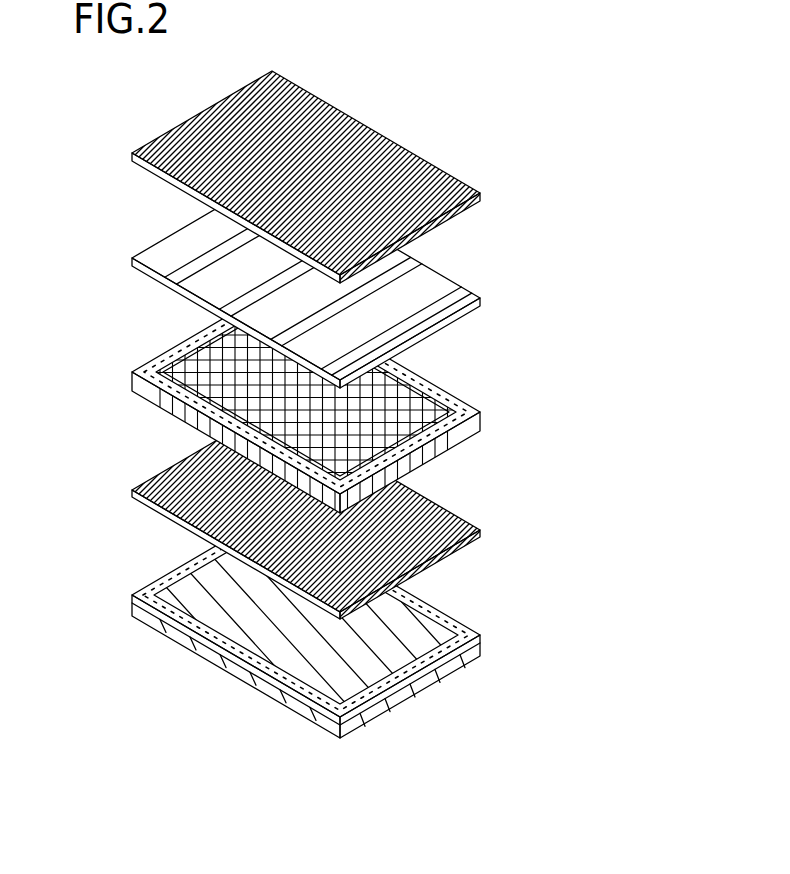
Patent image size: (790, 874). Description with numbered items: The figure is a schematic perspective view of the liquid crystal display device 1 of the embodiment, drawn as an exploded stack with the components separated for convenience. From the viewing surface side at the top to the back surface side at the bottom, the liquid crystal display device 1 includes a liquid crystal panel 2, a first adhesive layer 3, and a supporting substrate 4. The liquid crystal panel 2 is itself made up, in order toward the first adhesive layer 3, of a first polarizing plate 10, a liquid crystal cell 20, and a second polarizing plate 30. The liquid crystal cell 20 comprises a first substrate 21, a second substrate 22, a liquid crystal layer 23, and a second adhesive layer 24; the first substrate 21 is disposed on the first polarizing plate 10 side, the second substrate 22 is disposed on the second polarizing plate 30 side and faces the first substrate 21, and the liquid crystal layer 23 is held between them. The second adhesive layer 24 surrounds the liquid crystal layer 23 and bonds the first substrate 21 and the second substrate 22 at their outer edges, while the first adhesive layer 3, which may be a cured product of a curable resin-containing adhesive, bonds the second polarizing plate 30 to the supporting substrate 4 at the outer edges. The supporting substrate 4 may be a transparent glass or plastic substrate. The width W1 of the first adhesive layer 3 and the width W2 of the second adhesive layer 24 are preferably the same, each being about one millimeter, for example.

The liquid crystal display device 1 is at (507, 117).
The liquid crystal panel 2 is at (637, 144).
The first adhesive layer 3 is at (457, 620).
The supporting substrate 4 is at (480, 652).
The first polarizing plate 10 is at (427, 175).
The liquid crystal cell 20 is at (577, 268).
The first substrate 21 is at (427, 298).
The second substrate 22 is at (480, 428).
The liquid crystal layer 23 is at (437, 361).
The second adhesive layer 24 is at (458, 398).
The second polarizing plate 30 is at (443, 506).
The width of the first adhesive layer W1 is at (132, 595).
The width of the second adhesive layer W2 is at (132, 372).